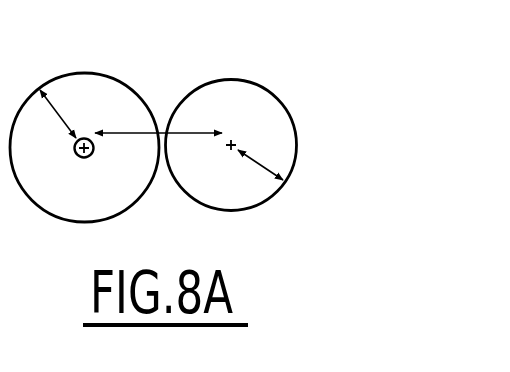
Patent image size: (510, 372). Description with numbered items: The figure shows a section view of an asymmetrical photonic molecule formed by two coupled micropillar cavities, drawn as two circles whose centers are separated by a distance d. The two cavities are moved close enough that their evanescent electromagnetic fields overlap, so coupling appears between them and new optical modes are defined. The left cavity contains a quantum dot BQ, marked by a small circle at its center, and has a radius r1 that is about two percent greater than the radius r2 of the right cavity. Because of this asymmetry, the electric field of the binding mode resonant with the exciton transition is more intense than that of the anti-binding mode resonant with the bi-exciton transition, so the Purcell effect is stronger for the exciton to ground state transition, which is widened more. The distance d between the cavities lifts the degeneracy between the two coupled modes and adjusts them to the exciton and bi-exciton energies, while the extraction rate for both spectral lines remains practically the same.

The quantum dot BQ is at (75, 157).
The distance between the two cavities d is at (158, 111).
The radius of the first cavity r1 is at (260, 153).
The radius of the second cavity r2 is at (64, 112).